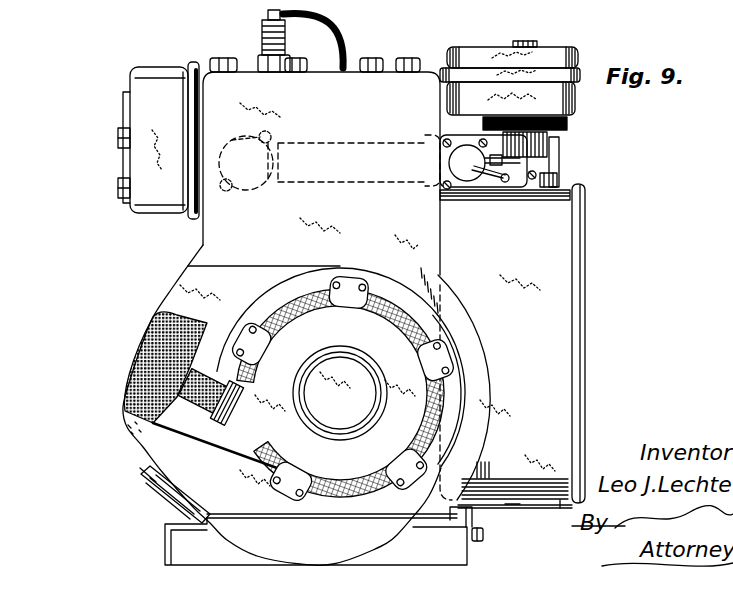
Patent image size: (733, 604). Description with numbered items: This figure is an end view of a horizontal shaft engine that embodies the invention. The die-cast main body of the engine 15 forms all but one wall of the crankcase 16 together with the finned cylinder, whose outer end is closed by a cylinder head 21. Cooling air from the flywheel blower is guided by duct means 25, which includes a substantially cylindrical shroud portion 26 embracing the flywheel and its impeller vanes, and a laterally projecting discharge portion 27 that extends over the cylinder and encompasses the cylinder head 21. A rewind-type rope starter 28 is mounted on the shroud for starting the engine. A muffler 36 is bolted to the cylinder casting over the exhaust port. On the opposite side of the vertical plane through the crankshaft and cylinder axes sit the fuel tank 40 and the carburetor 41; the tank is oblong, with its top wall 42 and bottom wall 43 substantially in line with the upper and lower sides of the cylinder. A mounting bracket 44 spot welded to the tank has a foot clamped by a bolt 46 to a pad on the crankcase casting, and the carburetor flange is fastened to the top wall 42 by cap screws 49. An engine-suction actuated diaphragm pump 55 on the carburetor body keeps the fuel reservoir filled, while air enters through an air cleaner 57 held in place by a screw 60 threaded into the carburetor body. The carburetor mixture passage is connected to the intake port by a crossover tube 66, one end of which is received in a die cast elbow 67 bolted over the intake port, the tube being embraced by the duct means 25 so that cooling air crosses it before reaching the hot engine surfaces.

The main body of the engine 15 is at (150, 282).
The crankcase 16 is at (466, 517).
The cylinder head 21 is at (247, 63).
The duct means 25 is at (190, 232).
The shroud portion 26 is at (168, 440).
The discharge portion 27 is at (340, 70).
The rewind-type rope starter 28 is at (128, 360).
The muffler 36 is at (123, 115).
The fuel tank 40 is at (597, 272).
The carburetor 41 is at (575, 153).
The top wall 42 is at (532, 180).
The bottom wall 43 is at (558, 508).
The mounting bracket 44 is at (508, 505).
The bolt 46 is at (484, 536).
The cap screws 49 is at (543, 180).
The diaphragm pump 55 is at (470, 176).
The air cleaner 57 is at (578, 36).
The screw 60 is at (524, 42).
The tube 66 is at (313, 143).
The die cast elbow 67 is at (244, 140).